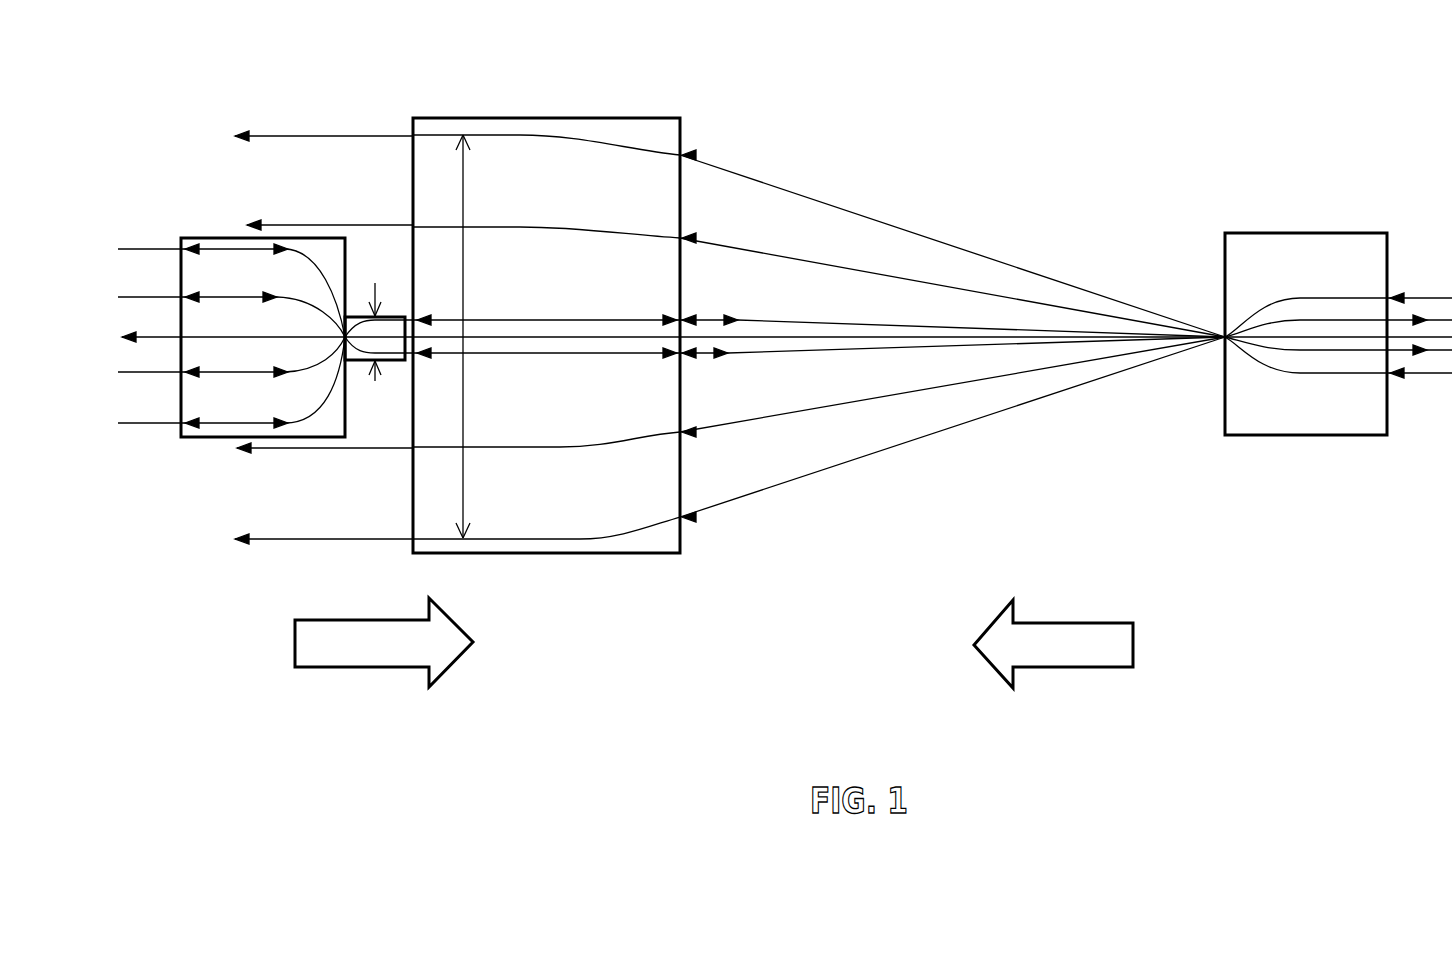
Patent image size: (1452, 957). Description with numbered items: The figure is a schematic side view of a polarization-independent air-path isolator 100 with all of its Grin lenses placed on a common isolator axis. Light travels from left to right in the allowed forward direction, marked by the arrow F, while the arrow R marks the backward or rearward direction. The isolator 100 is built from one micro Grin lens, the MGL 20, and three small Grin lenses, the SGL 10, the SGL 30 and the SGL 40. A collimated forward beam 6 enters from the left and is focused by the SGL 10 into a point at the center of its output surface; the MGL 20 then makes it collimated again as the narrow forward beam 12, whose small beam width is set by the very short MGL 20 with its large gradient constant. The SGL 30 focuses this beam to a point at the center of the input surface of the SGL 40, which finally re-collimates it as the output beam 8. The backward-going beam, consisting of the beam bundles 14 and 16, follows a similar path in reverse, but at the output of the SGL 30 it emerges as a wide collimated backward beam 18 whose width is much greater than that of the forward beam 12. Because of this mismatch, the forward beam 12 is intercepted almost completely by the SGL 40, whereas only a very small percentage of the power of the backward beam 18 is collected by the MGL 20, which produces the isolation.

The collimated forward beam 6 is at (156, 439).
The collimated output beam 8 is at (1424, 381).
The SGL (L1) 10 is at (193, 236).
The collimated forward beam 12 is at (408, 316).
The backward beam bundle 14 is at (955, 231).
The backward beam bundle 16 is at (712, 318).
The collimated backward beam 18 is at (396, 450).
The MGL (L4) 20 is at (366, 366).
The SGL (L2) 30 is at (507, 116).
The SGL (L3) 40 is at (1308, 231).
The polarization-independent air-path isolator 100 is at (1062, 112).